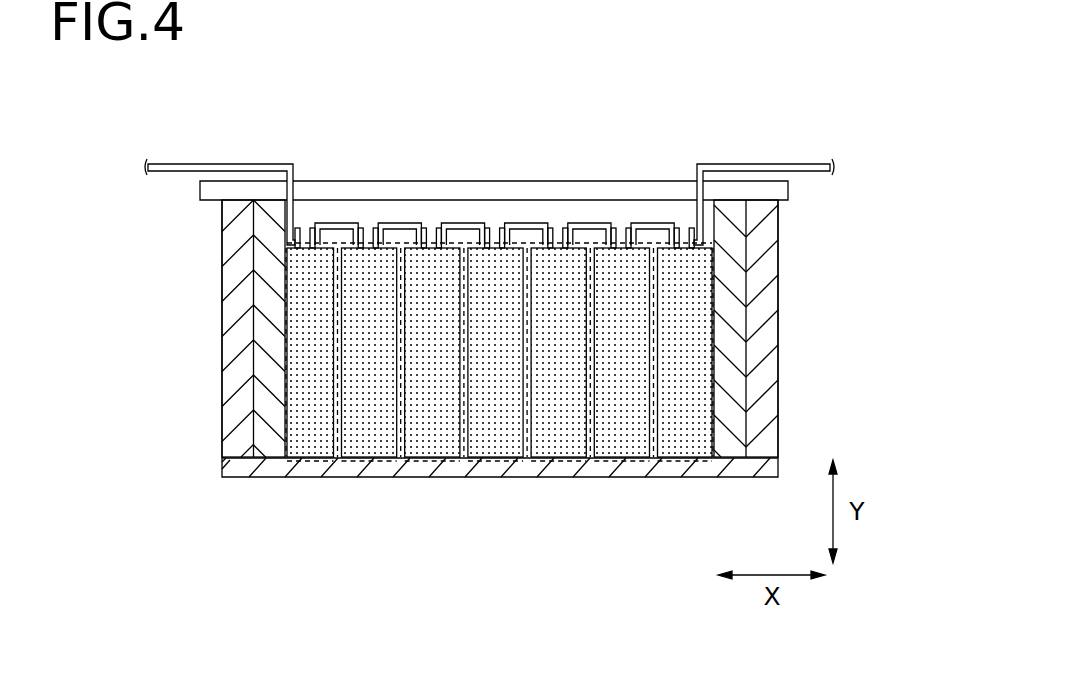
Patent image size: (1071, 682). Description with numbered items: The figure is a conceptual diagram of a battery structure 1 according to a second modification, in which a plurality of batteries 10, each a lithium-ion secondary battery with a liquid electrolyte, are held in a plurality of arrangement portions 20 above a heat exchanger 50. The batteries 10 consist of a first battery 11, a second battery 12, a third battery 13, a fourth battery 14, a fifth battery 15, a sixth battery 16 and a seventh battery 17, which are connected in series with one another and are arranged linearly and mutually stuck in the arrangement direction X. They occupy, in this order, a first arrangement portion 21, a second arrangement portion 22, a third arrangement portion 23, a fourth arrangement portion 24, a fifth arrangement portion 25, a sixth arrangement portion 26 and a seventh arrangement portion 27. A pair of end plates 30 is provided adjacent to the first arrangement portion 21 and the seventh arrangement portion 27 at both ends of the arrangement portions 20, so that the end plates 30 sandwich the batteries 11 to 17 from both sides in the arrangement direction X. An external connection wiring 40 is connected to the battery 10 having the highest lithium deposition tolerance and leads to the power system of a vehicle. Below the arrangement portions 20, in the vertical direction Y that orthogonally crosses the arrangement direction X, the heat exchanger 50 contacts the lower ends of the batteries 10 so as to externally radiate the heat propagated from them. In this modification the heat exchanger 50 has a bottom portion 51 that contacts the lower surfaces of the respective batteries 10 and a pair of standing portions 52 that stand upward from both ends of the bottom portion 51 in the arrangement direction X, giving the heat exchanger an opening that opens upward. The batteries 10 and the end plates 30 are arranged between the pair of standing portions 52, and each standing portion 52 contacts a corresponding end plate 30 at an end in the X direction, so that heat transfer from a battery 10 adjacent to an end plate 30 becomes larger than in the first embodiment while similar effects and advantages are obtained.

The battery structure 1 is at (723, 72).
The batteries 10 is at (491, 256).
The first battery 11 is at (305, 262).
The second battery 12 is at (368, 262).
The third battery 13 is at (431, 262).
The fourth battery 14 is at (495, 262).
The fifth battery 15 is at (558, 262).
The sixth battery 16 is at (621, 262).
The seventh battery 17 is at (684, 281).
The arrangement portions 20 is at (499, 523).
The first arrangement portion 21 is at (310, 461).
The second arrangement portion 22 is at (370, 461).
The third arrangement portion 23 is at (432, 461).
The fourth arrangement portion 24 is at (494, 461).
The fifth arrangement portion 25 is at (555, 461).
The sixth arrangement portion 26 is at (617, 461).
The seventh arrangement portion 27 is at (685, 498).
The end plate 30 is at (262, 313).
The external connection wiring 40 is at (215, 163).
The heat exchanger 50 is at (226, 475).
The bottom portion 51 is at (348, 470).
The standing portions 52 is at (227, 387).